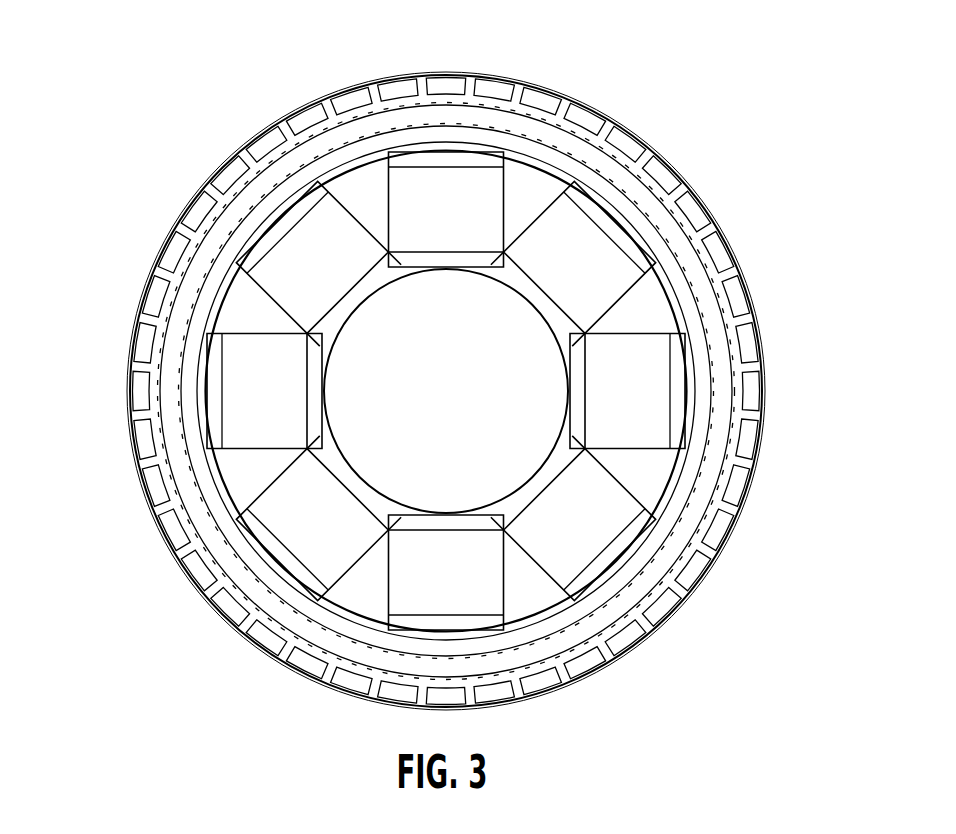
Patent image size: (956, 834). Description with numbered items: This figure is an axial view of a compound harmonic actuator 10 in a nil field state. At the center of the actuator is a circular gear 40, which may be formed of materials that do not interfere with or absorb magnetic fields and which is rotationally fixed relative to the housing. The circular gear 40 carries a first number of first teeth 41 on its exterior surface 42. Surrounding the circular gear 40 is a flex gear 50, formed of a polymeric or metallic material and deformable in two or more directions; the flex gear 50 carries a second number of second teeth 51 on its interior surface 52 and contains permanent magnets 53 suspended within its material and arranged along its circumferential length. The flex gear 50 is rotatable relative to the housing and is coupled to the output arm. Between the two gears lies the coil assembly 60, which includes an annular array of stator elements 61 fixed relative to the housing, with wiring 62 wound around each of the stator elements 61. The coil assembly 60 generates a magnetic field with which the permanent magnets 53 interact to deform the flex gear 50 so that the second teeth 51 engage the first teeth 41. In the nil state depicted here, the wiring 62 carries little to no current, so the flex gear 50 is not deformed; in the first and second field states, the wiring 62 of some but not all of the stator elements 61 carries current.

The compound harmonic actuator 10 is at (407, 391).
The circular gear 40 is at (475, 391).
The first teeth 41 is at (513, 391).
The exterior surface 42 is at (515, 391).
The flex gear 50 is at (446, 373).
The second teeth 51 is at (415, 391).
The interior surface 52 is at (446, 400).
The permanent magnets 53 is at (401, 390).
The coil assembly 60 is at (446, 391).
The stator elements 61 is at (446, 432).
The wiring 62 is at (501, 391).